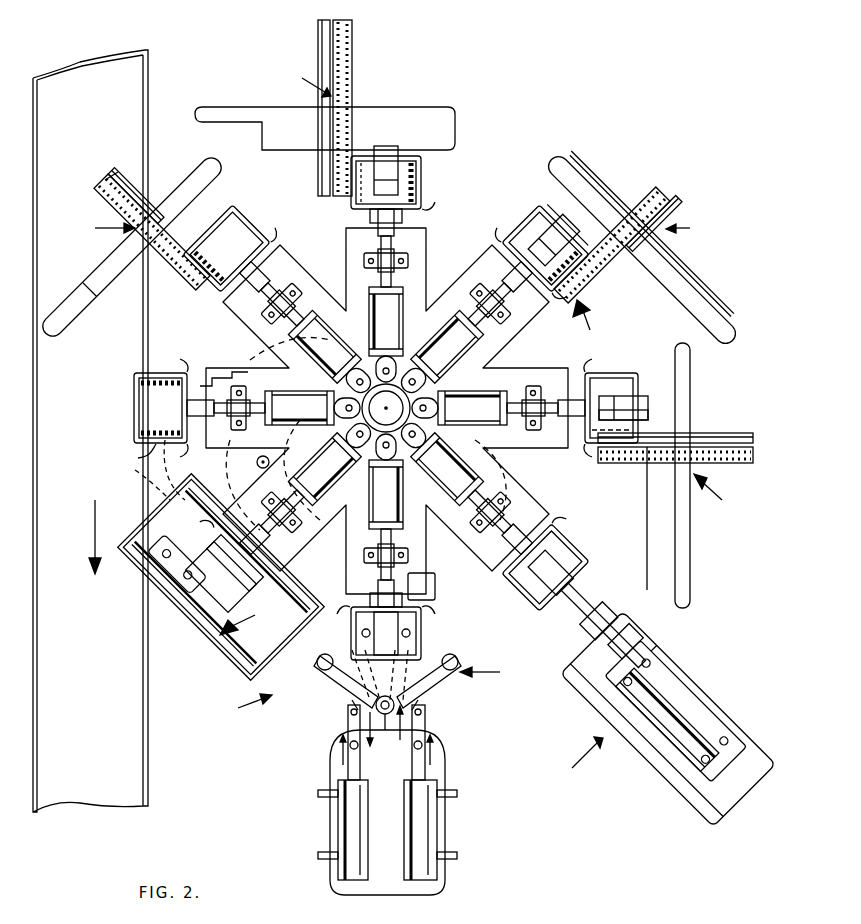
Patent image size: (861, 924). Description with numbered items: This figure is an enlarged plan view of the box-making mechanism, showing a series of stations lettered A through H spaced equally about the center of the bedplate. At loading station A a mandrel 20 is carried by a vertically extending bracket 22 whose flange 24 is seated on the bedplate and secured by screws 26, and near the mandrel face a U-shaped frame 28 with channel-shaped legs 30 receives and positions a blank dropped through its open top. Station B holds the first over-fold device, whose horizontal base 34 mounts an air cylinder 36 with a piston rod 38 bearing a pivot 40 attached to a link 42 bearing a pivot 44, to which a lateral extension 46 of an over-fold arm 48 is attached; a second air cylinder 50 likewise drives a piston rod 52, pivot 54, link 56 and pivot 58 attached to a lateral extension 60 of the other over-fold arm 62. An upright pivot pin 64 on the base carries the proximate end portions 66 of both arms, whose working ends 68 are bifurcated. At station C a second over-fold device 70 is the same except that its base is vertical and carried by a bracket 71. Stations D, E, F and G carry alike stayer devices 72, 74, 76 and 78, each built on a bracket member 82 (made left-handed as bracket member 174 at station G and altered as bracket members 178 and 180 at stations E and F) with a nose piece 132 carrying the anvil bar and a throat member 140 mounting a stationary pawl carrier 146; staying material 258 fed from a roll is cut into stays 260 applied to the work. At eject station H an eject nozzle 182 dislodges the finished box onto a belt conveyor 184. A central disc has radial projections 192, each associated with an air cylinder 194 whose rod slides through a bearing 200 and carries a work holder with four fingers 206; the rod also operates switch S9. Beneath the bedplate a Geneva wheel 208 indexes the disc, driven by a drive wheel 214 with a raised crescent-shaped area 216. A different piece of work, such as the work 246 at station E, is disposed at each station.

The mandrel 20 is at (415, 471).
The bracket 22 is at (187, 574).
The flange 24 is at (176, 564).
The screws 26 is at (166, 553).
The frame 28 is at (248, 550).
The guide rail 30 is at (194, 604).
The base 34 is at (455, 767).
The air cylinder 36 is at (343, 830).
The piston rod 38 is at (354, 742).
The pivot 40 is at (354, 745).
The link 42 is at (348, 737).
The pivot 44 is at (355, 705).
The lateral extension 46 is at (346, 682).
The over-fold arm 48 is at (600, 577).
The air cylinder 50 is at (430, 830).
The piston rod 52 is at (418, 742).
The pivot 54 is at (418, 745).
The link 56 is at (424, 737).
The pivot 58 is at (415, 705).
The lateral extension 60 is at (429, 682).
The over-fold arm 62 is at (492, 672).
The upright pivot pin 64 is at (385, 713).
The proximate end portions 66 is at (385, 726).
The working ends 68 is at (387, 662).
The second over-fold device 70 is at (668, 719).
The bracket 71 is at (675, 711).
The stayer device 72 is at (719, 494).
The stayer device 74 is at (688, 224).
The stayer device 76 is at (307, 76).
The stayer device 78 is at (100, 228).
The bracket member 82 is at (688, 540).
The nose piece 132 is at (388, 142).
The throat member 140 is at (322, 30).
The stationary pawl carrier 146 is at (115, 175).
The bracket member 174 is at (72, 340).
The bracket member 178 is at (641, 249).
The bracket member 180 is at (408, 118).
The eject nozzle 182 is at (206, 380).
The belt conveyor 184 is at (140, 92).
The projections 192 is at (530, 300).
The air cylinder 194 is at (459, 408).
The bearing 200 is at (500, 340).
The fingers 206 is at (535, 232).
The wheel 208 is at (495, 460).
The drive wheel 214 is at (216, 577).
The crescent-shaped area 216 is at (150, 495).
The work 246 is at (565, 172).
The staying material 258 is at (352, 42).
The stays 260 is at (430, 192).
The switch S9 is at (435, 586).